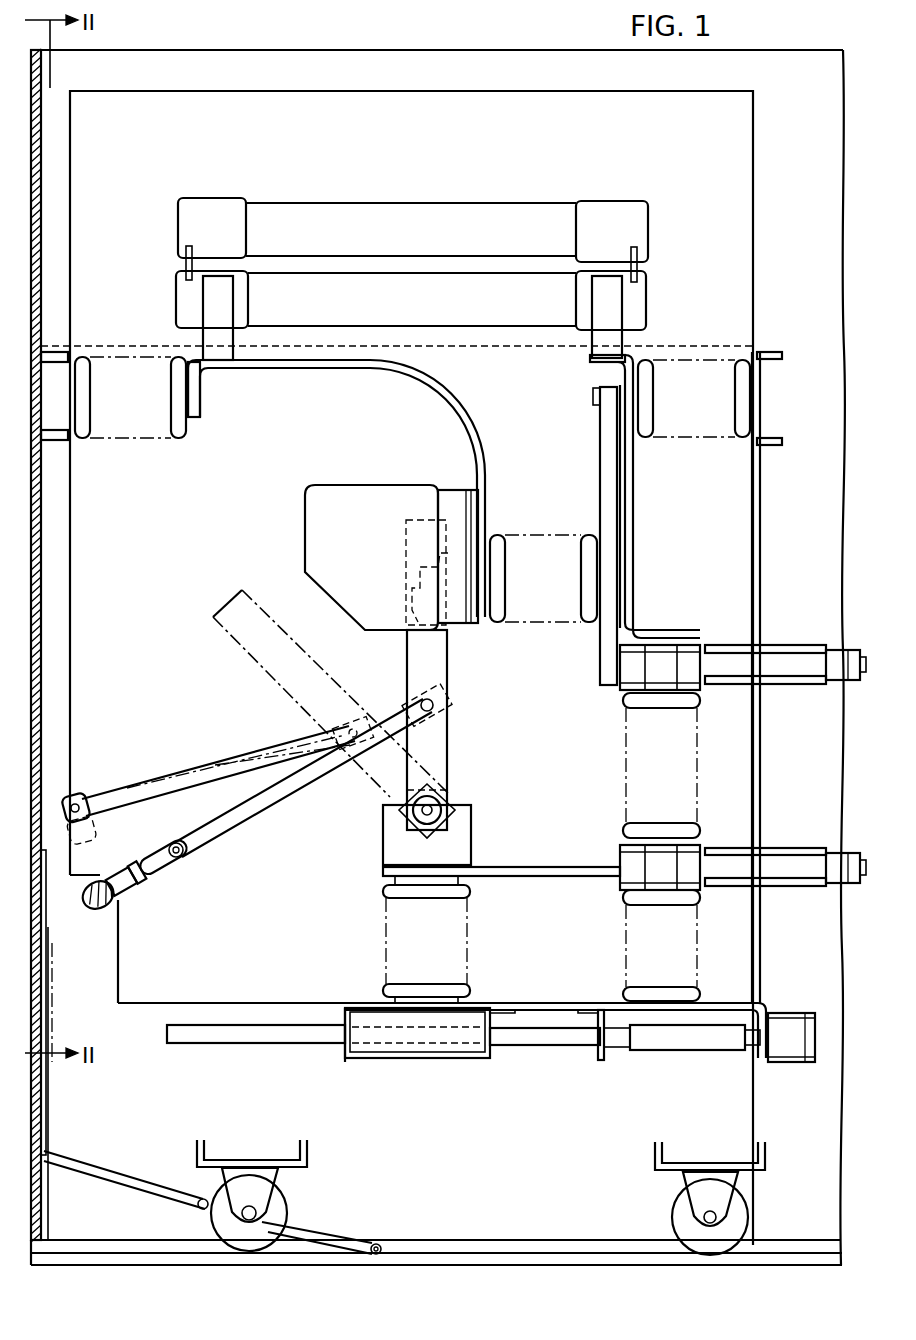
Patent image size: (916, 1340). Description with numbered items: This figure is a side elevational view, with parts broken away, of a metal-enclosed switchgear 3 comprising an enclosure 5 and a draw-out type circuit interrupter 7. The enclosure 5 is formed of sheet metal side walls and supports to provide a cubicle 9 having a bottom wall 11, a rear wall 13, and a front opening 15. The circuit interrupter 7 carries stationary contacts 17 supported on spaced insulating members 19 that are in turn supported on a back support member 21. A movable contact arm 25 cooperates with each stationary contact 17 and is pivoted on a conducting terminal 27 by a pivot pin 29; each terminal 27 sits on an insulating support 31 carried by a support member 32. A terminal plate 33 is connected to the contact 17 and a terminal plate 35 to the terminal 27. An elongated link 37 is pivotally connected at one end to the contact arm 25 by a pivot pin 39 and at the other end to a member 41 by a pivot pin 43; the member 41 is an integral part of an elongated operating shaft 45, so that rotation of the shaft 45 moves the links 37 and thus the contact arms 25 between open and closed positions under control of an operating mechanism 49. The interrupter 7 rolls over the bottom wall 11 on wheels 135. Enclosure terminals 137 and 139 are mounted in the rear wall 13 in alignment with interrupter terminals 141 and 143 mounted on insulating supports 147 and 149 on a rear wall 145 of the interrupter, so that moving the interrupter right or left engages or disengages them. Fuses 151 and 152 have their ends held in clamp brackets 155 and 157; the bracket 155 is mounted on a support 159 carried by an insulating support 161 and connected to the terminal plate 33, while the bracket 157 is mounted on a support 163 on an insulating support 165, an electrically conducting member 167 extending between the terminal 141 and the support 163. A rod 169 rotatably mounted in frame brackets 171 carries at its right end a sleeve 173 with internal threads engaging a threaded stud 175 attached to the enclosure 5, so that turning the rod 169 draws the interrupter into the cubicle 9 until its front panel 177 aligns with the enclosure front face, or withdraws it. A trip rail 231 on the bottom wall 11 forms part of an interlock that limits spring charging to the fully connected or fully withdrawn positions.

The metal-enclosed switchgear 3 is at (23, 598).
The enclosure 5 is at (282, 62).
The circuit interrupter 7 is at (240, 701).
The cubicle 9 is at (525, 83).
The bottom wall 11 is at (541, 1262).
The rear wall 13 is at (843, 762).
The front opening 15 is at (408, 55).
The stationary contact 17 is at (466, 618).
The insulating member 19 is at (556, 590).
The back support member 21 is at (603, 645).
The movable contact arm 25 is at (402, 657).
The conducting terminal 27 is at (386, 822).
The pivot pin 29 is at (446, 806).
The insulating support 31 is at (440, 940).
The support member 32 is at (548, 1003).
The terminal plate 33 is at (484, 448).
The terminal plate 35 is at (533, 870).
The elongated link 37 is at (268, 797).
The pivot pin 39 is at (437, 704).
The member 41 is at (162, 842).
The pivot pin 43 is at (176, 842).
The operating shaft 45 is at (90, 904).
The operating mechanism 49 is at (64, 735).
The wheels 135 is at (278, 1200).
The enclosure terminal 137 is at (850, 652).
The enclosure terminal 139 is at (853, 882).
The interrupter terminal 141 is at (780, 686).
The interrupter terminal 143 is at (812, 888).
The rear wall of the interrupter 145 is at (758, 760).
The insulating support 147 is at (678, 768).
The insulating support 149 is at (676, 948).
The fuse 151 is at (415, 244).
The fuse 152 is at (415, 309).
The clamp bracket 155 is at (210, 291).
The clamp bracket 157 is at (605, 310).
The support 159 is at (200, 382).
The insulating support 161 is at (146, 407).
The support 163 is at (590, 357).
The insulating support 165 is at (708, 410).
The electrically conducting member 167 is at (632, 540).
The rod 169 is at (236, 1043).
The frame bracket 171 is at (348, 1060).
The sleeve 173 is at (690, 1050).
The threaded stud 175 is at (752, 1045).
The front panel 177 is at (41, 1214).
The trip rail 231 is at (335, 1245).